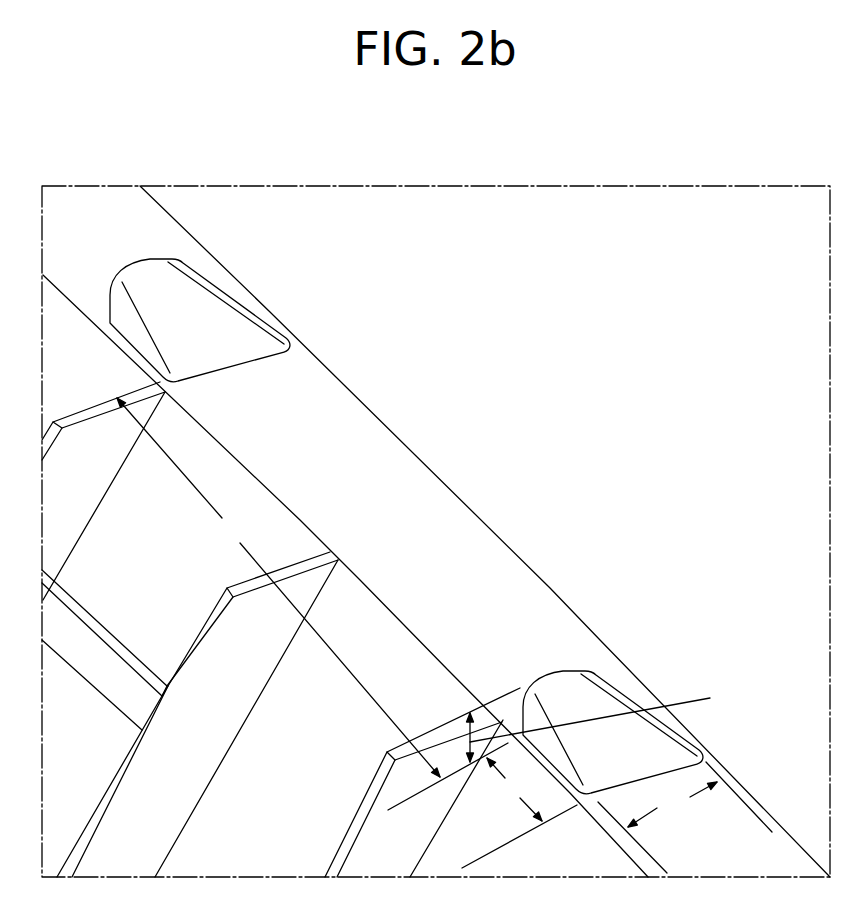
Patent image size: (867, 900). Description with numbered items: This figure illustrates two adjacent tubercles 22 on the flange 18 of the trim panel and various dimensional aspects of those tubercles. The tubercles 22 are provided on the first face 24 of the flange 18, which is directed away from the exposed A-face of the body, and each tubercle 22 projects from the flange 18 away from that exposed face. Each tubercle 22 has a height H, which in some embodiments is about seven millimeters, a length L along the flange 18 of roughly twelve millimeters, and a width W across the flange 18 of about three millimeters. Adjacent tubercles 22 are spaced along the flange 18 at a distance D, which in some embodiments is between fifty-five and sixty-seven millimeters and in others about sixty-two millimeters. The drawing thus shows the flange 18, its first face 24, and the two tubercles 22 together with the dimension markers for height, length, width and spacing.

The flange 18 is at (373, 447).
The tubercle 22 is at (227, 290).
The first face 24 is at (520, 597).